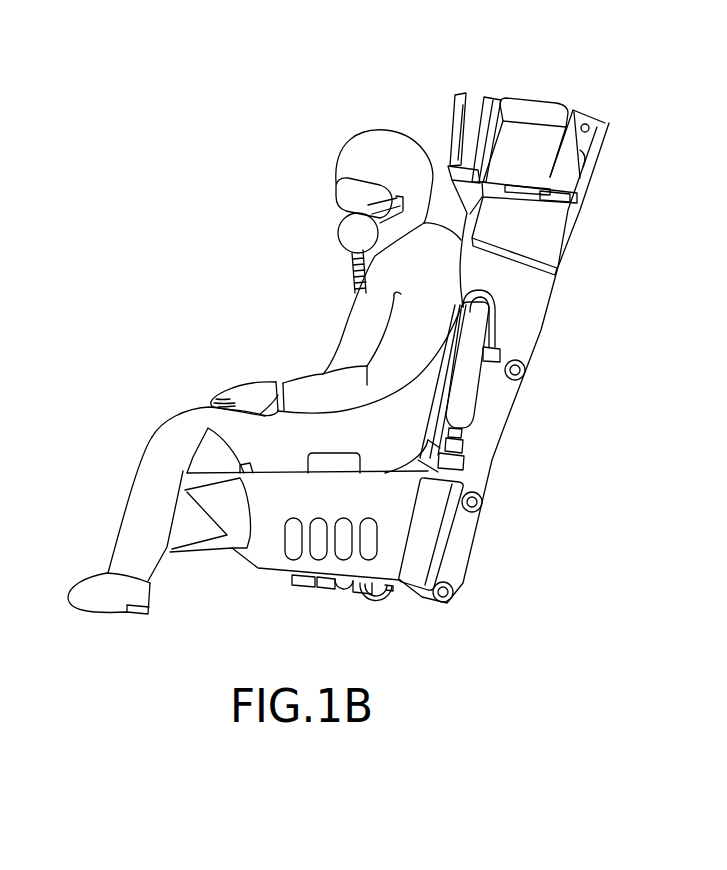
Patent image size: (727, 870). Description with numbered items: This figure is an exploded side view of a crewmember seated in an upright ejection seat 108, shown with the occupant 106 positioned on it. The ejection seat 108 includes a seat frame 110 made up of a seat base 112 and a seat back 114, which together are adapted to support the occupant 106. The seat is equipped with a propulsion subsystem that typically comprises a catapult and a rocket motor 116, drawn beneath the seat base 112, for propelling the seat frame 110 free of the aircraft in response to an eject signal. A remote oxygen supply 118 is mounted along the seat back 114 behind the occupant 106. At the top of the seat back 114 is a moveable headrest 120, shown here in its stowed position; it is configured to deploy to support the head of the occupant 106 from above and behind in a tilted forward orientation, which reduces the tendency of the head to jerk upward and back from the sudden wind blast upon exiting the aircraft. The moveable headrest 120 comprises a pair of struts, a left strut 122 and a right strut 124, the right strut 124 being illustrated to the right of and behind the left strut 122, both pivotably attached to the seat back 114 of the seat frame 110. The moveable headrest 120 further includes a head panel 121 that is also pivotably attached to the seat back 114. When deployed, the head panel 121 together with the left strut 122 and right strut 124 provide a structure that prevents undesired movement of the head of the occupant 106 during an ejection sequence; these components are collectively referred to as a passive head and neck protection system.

The occupant 106 is at (157, 437).
The ejection seat 108 is at (530, 303).
The seat frame 110 is at (490, 460).
The seat base 112 is at (267, 548).
The seat back 114 is at (528, 330).
The rocket motor 116 is at (373, 595).
The remote oxygen supply 118 is at (463, 397).
The moveable headrest 120 is at (481, 107).
The head panel 121 is at (473, 93).
The left strut 122 is at (458, 97).
The right strut 124 is at (453, 137).